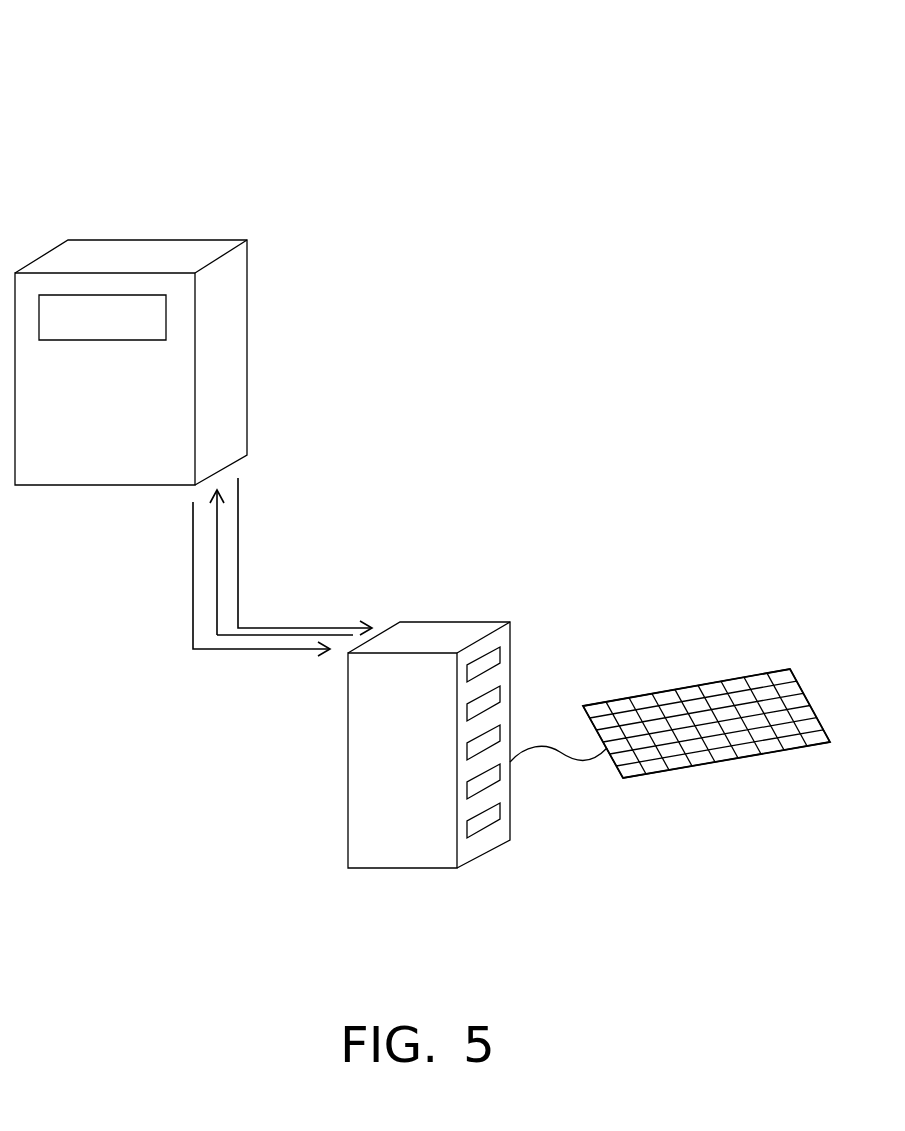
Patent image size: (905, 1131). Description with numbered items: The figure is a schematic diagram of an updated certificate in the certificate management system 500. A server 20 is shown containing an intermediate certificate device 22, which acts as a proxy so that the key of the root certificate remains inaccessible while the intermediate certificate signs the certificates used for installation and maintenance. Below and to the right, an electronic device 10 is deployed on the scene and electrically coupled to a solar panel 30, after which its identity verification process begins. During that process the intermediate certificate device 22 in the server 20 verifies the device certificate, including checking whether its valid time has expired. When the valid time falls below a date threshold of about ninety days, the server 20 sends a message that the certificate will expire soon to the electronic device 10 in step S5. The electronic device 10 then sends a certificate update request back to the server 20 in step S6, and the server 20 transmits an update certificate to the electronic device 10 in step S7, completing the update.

The certificate management system 500 is at (75, 58).
The server 20 is at (163, 314).
The intermediate certificate device 22 is at (166, 315).
The electronic device 10 is at (442, 630).
The solar panel 30 is at (687, 687).
The step S5 is at (305, 556).
The step S6 is at (268, 637).
The step S7 is at (240, 579).